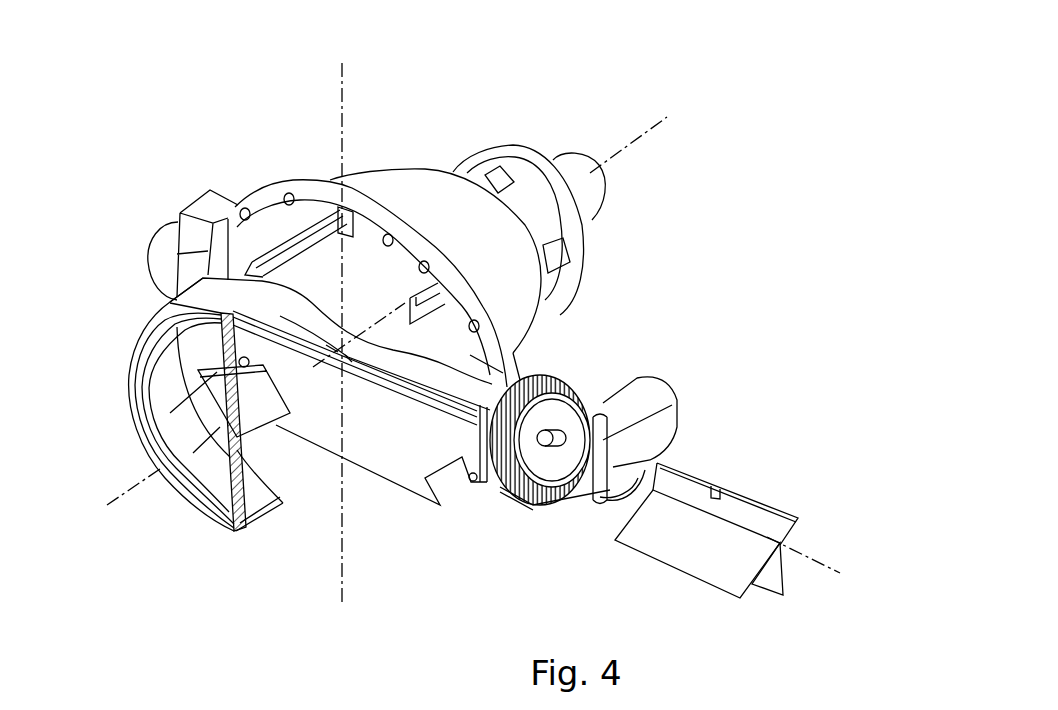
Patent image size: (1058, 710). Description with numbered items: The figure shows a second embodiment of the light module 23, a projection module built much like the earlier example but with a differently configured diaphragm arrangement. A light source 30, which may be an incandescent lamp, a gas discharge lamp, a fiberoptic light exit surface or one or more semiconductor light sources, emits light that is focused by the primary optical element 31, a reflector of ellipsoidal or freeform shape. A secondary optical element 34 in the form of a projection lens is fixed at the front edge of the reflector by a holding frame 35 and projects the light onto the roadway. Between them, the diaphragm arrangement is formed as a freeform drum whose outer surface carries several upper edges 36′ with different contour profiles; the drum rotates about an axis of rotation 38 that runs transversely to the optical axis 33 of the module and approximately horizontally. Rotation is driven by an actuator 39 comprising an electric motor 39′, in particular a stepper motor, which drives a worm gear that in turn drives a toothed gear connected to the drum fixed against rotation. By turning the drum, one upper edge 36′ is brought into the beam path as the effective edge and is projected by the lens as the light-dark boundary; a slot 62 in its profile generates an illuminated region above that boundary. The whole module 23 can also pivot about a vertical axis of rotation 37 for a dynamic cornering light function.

The light module 23 is at (427, 143).
The light source 30 is at (437, 300).
The primary optical element 31 is at (397, 193).
The optical axis 33 is at (637, 143).
The secondary optical element 34 is at (203, 370).
The holding frame 35 is at (283, 238).
The upper edges 36′ is at (448, 368).
The vertical axis of rotation 37 is at (341, 91).
The axis of rotation 38 is at (829, 568).
The actuator 39 is at (698, 362).
The electric motor 39′ is at (656, 392).
The slot 62 is at (718, 490).